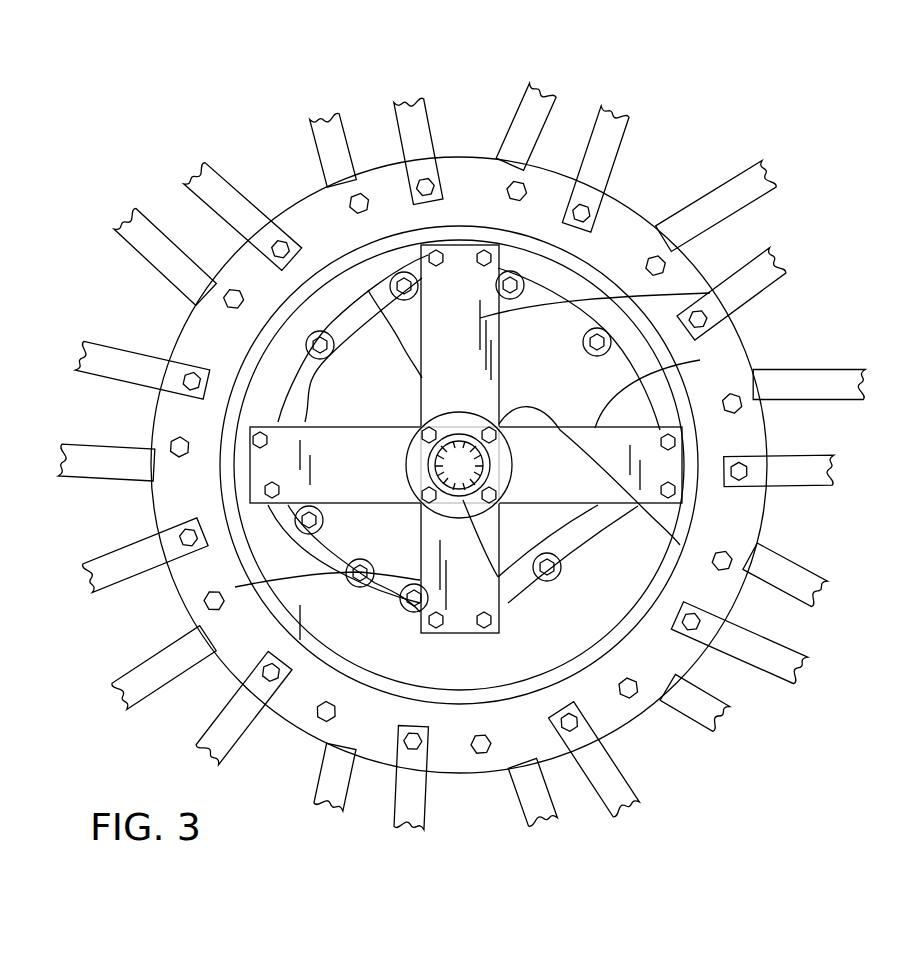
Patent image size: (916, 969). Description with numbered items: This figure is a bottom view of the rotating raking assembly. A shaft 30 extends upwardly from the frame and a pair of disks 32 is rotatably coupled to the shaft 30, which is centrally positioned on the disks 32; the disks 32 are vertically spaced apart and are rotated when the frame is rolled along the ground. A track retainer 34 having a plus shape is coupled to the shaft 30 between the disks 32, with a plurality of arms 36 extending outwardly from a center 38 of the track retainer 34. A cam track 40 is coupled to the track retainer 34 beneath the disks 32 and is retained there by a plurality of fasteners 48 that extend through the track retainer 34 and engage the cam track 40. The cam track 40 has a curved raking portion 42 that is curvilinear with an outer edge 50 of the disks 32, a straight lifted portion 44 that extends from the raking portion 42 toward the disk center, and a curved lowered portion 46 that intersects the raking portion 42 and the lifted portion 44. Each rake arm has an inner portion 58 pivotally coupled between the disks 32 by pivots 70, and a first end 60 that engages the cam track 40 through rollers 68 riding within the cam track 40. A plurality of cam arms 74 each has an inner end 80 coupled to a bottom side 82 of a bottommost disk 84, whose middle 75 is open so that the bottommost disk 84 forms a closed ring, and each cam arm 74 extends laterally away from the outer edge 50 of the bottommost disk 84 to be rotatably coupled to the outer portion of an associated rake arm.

The shaft 30 is at (708, 640).
The disks 32 is at (655, 215).
The track retainer 34 is at (340, 175).
The arms 36 is at (540, 302).
The center 38 is at (692, 505).
The cam track 40 is at (425, 172).
The raking portion 42 is at (383, 262).
The lifted portion 44 is at (612, 556).
The lowered portion 46 is at (350, 605).
The fasteners 48 is at (262, 487).
The outer edge 50 is at (556, 160).
The inner portion 58 is at (718, 180).
The first end 60 is at (486, 750).
The rollers 68 is at (300, 520).
The pivots 70 is at (483, 755).
The cam arms 74 is at (628, 140).
The middle 75 is at (362, 403).
The inner end 80 is at (548, 712).
The bottom side 82 is at (610, 722).
The bottommost disk 84 is at (258, 666).